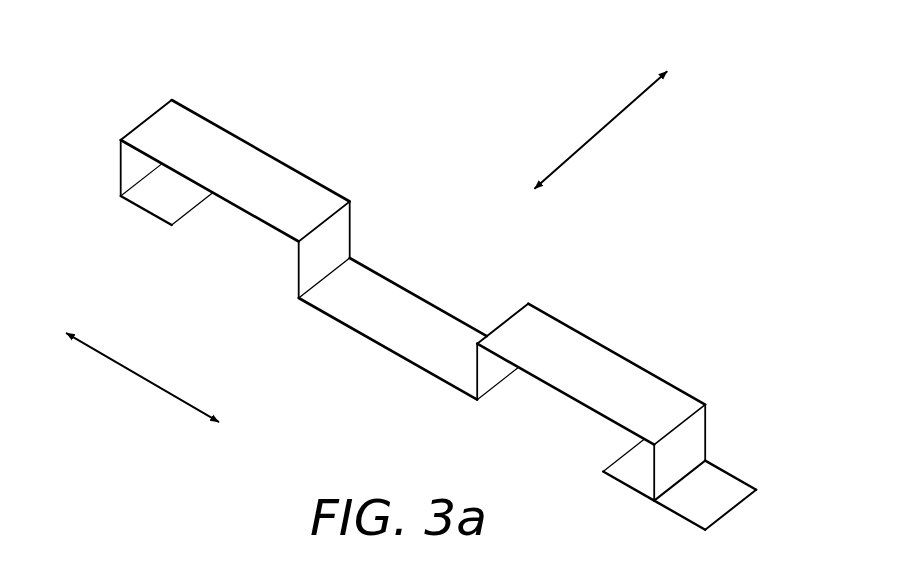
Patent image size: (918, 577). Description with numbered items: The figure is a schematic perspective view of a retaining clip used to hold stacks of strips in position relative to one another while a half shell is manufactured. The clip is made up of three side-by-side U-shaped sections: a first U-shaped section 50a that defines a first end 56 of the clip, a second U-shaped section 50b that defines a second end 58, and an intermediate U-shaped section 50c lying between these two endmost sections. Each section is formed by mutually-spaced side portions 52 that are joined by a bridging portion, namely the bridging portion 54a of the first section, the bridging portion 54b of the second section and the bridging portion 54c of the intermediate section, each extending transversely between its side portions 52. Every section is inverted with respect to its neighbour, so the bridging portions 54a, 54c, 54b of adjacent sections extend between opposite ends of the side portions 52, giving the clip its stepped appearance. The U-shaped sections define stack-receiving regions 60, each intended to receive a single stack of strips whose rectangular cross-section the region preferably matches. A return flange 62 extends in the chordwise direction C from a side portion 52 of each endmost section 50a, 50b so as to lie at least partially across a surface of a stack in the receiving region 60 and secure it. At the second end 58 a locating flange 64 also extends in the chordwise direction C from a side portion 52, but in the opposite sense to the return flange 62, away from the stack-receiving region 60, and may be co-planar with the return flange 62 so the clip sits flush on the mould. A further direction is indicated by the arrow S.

The first U-shaped section 50a is at (247, 151).
The second U-shaped section 50b is at (596, 347).
The intermediate U-shaped section 50c is at (396, 343).
The side portion 52 is at (137, 162).
The bridging portion of first U-shaped section 54a is at (287, 183).
The bridging portion of second U-shaped section 54b is at (630, 373).
The bridging portion of intermediate U-shaped section 54c is at (408, 302).
The first end 56 is at (118, 106).
The second end 58 is at (742, 440).
The stack-receiving region 60 is at (212, 235).
The return flange 62 is at (148, 224).
The locating flange 64 is at (708, 502).
The spacing direction S is at (601, 130).
The chordwise direction C is at (143, 377).